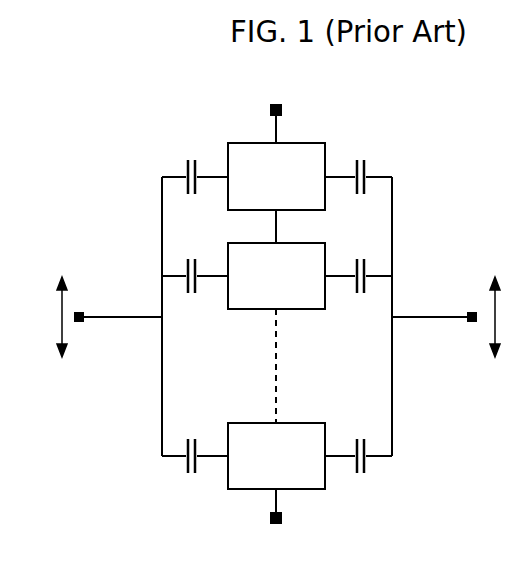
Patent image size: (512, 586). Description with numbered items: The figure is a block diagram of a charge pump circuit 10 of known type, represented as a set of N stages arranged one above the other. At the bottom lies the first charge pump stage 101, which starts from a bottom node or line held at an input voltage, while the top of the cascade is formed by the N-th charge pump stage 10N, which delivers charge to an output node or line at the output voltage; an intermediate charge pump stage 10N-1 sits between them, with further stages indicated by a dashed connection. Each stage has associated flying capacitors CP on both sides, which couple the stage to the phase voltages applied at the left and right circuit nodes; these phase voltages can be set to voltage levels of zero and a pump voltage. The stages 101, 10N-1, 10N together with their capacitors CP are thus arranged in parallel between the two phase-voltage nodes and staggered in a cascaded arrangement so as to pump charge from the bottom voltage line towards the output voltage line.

The charge pump circuit 10 is at (437, 165).
The N-th charge pump stage 10N is at (243, 155).
The (N-1)-th charge pump stage 10N-1 is at (302, 304).
The first charge pump stage 101 is at (305, 485).
The flying capacitor CP is at (405, 490).